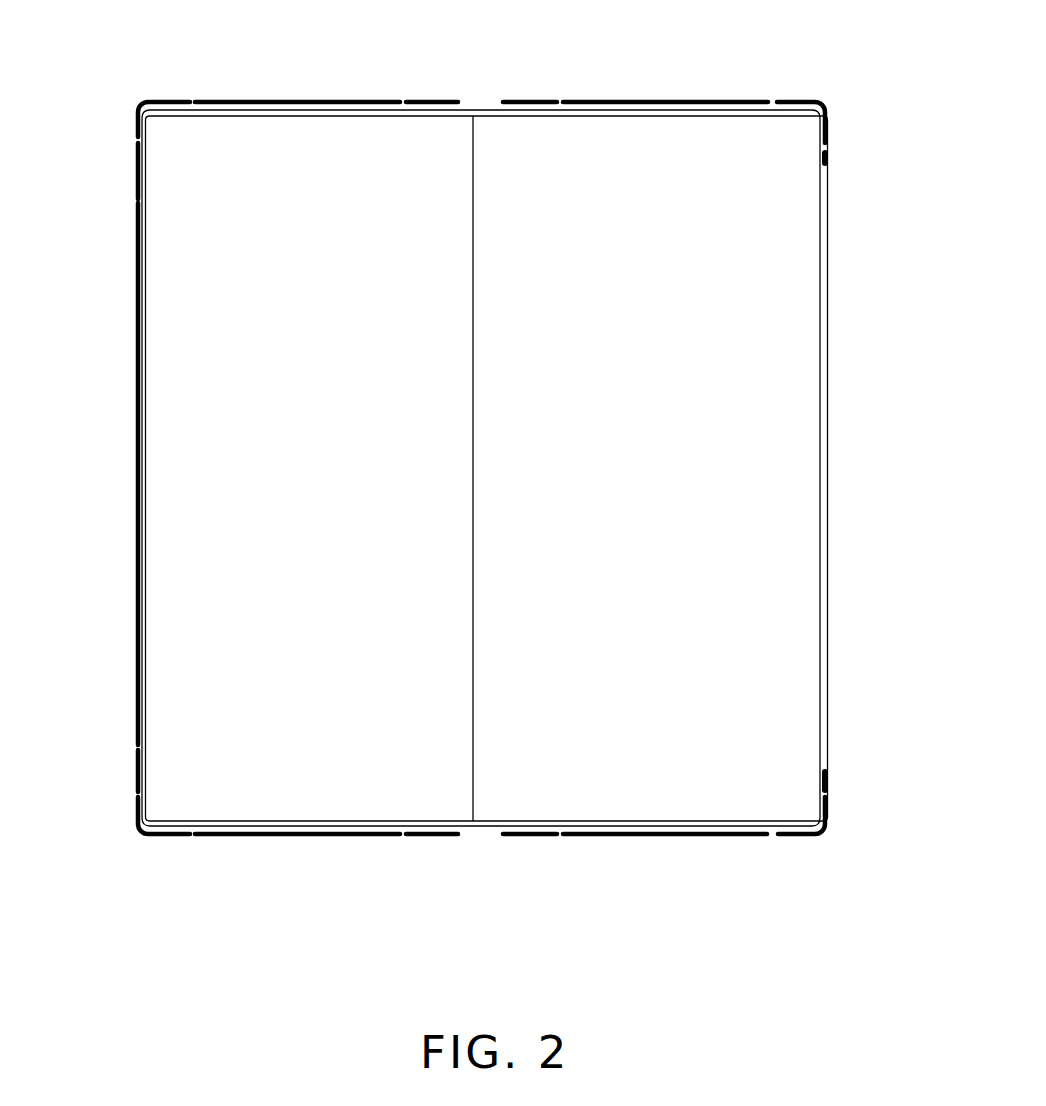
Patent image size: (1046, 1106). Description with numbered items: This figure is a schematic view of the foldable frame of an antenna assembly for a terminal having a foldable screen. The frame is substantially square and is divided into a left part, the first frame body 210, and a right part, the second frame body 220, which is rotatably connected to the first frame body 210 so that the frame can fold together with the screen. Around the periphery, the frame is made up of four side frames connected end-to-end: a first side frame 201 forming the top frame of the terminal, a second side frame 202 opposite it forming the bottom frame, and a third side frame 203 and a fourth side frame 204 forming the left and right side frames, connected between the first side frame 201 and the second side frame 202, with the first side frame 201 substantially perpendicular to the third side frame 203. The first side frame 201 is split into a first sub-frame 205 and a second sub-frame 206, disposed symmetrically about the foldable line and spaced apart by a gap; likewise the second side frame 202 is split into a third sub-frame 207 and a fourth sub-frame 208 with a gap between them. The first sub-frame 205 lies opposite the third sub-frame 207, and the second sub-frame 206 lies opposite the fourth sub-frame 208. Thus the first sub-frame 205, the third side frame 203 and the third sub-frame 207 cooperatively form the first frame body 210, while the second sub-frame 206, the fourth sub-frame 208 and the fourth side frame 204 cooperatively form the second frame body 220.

The first side frame 201 is at (472, 95).
The second side frame 202 is at (472, 843).
The third side frame 203 is at (108, 432).
The fourth side frame 204 is at (830, 373).
The first sub-frame 205 is at (253, 95).
The second sub-frame 206 is at (718, 90).
The third sub-frame 207 is at (262, 843).
The fourth sub-frame 208 is at (690, 845).
The first frame body 210 is at (253, 387).
The second frame body 220 is at (706, 592).